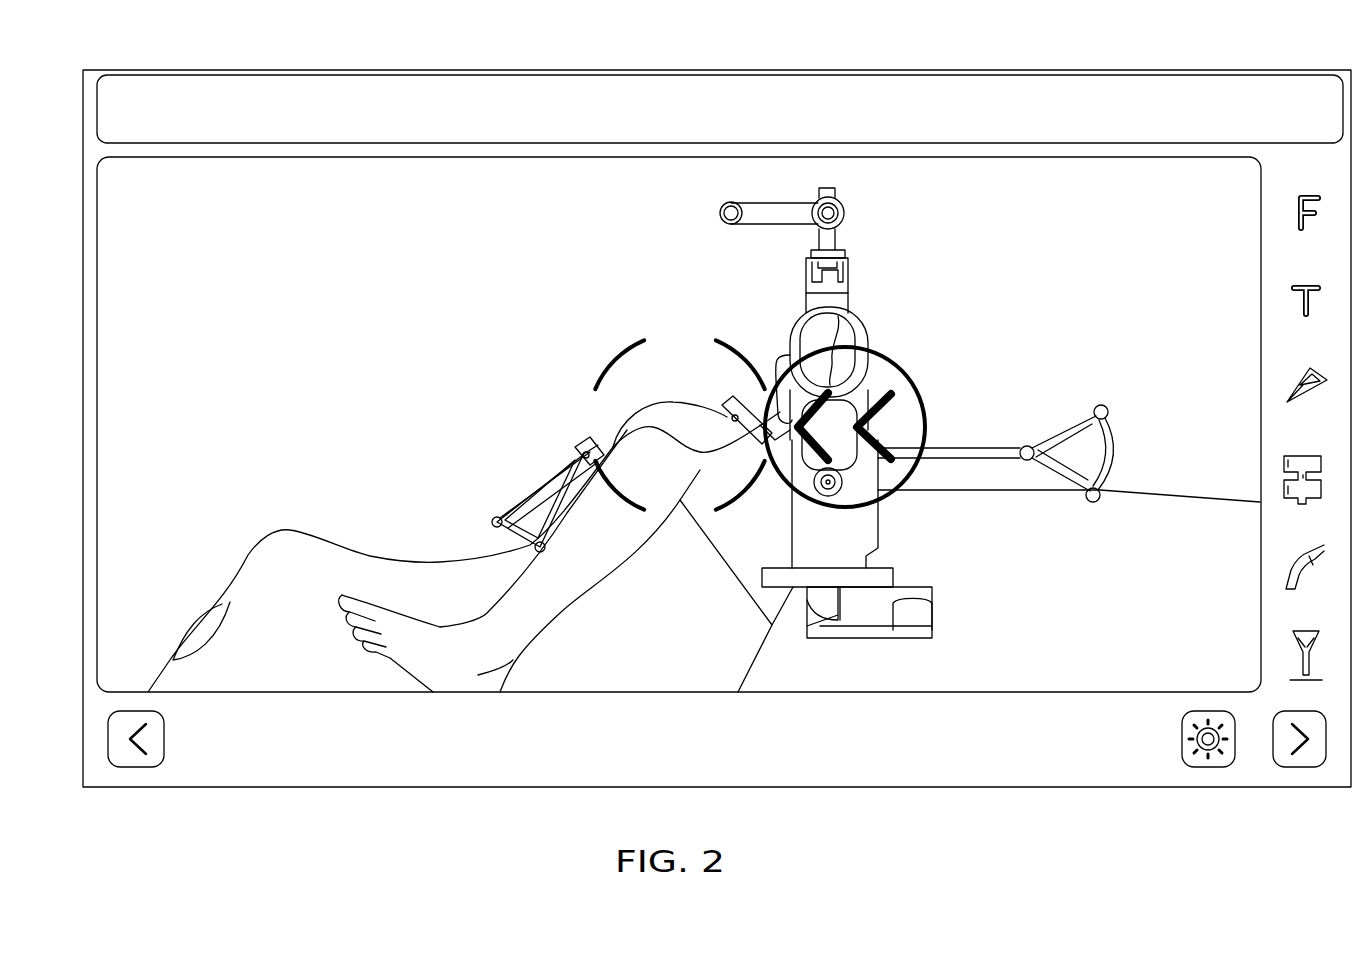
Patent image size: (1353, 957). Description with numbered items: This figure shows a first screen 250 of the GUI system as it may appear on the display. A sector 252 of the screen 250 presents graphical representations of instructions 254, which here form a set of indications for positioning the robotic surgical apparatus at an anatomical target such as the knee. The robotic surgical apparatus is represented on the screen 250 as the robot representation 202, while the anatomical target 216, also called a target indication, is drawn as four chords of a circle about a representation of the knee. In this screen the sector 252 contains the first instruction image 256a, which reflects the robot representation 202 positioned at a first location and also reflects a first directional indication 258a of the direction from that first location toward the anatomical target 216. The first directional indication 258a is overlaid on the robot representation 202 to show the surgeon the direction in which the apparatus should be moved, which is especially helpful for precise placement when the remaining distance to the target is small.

The screen 250 is at (845, 70).
The sector 252 is at (787, 157).
The instructions 254 is at (583, 230).
The first instruction image 256a is at (512, 342).
The anatomical target 216 is at (613, 357).
The robot representation 202 is at (850, 274).
The first directional indication 258a is at (900, 368).